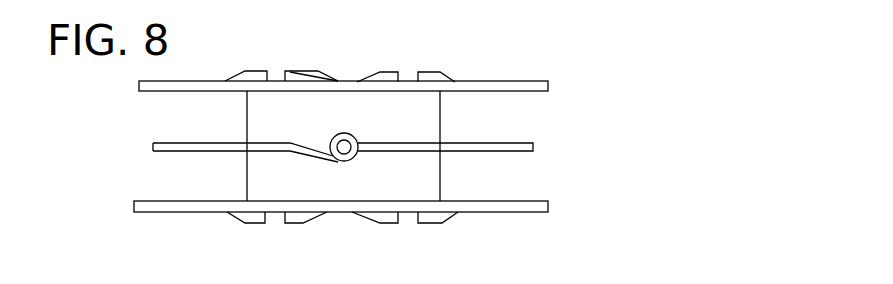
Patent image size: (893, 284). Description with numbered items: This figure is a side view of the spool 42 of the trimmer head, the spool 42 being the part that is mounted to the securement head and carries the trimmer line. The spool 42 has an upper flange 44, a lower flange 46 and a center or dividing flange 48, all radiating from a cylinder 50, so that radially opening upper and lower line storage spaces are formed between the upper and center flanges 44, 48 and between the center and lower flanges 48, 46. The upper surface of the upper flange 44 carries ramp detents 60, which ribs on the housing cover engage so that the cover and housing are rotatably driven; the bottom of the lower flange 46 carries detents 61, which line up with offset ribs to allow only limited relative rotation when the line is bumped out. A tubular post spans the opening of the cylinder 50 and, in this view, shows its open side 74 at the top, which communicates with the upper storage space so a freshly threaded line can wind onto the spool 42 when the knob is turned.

The spool 42 is at (484, 62).
The upper flange 44 is at (525, 81).
The lower flange 46 is at (517, 201).
The center flange 48 is at (364, 133).
The cylinder 50 is at (258, 128).
The ramp detents 60 is at (254, 78).
The detents 61 is at (295, 224).
The open side 74 is at (333, 143).